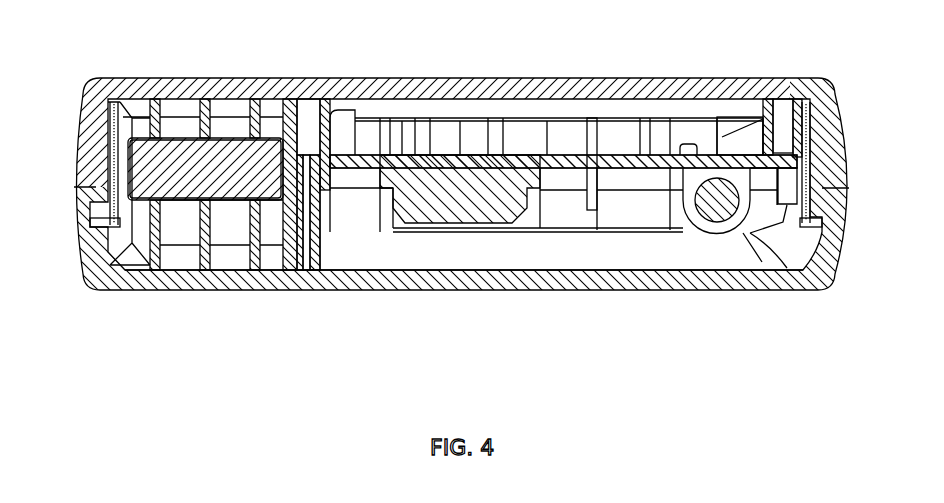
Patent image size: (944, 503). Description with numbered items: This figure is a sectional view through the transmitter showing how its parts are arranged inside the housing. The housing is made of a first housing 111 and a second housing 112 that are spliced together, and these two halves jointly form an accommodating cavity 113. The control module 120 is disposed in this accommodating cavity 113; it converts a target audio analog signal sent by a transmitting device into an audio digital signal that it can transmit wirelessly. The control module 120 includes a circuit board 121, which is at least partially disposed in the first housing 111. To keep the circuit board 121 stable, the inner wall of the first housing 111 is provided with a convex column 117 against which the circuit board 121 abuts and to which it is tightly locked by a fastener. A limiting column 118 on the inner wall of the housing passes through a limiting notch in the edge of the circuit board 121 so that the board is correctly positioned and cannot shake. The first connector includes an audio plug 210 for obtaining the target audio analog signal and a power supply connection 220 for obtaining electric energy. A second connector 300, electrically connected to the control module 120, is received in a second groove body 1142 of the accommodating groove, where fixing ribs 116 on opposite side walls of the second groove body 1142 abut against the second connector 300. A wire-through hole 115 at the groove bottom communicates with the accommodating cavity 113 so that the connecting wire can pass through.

The first housing 111 is at (378, 95).
The second housing 112 is at (368, 273).
The accommodating cavity 113 is at (513, 248).
The wire-through hole 115 is at (727, 137).
The fixing ribs 116 is at (153, 99).
The convex column 117 is at (792, 120).
The limiting column 118 is at (594, 210).
The control module 120 is at (630, 167).
The circuit board 121 is at (630, 167).
The audio plug 210 is at (725, 212).
The power supply connection 220 is at (437, 220).
The second connector 300 is at (235, 160).
The second groove body 1142 is at (237, 223).